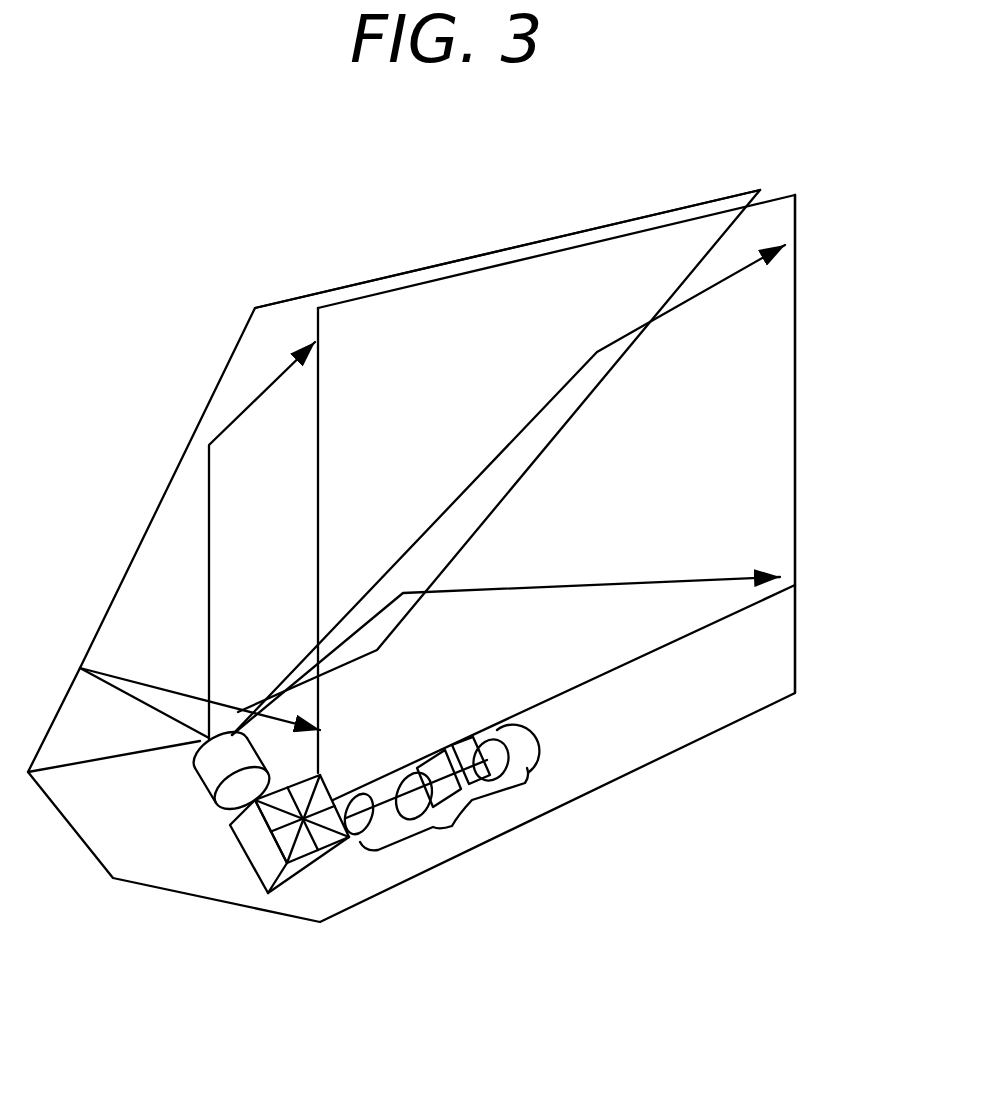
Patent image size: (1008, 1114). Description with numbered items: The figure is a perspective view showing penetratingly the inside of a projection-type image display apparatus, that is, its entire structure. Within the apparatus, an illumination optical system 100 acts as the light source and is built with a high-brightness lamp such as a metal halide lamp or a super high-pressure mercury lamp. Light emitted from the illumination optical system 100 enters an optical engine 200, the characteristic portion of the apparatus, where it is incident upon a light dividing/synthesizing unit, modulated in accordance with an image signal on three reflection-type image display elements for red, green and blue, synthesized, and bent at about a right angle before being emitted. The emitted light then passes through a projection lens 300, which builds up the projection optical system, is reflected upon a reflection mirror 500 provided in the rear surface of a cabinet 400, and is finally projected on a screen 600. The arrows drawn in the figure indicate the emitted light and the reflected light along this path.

The illumination optical system 100 is at (455, 837).
The optical engine 200 is at (248, 870).
The projection lens 300 is at (205, 774).
The cabinet 400 is at (393, 274).
The reflection mirror 500 is at (156, 510).
The screen 600 is at (780, 367).